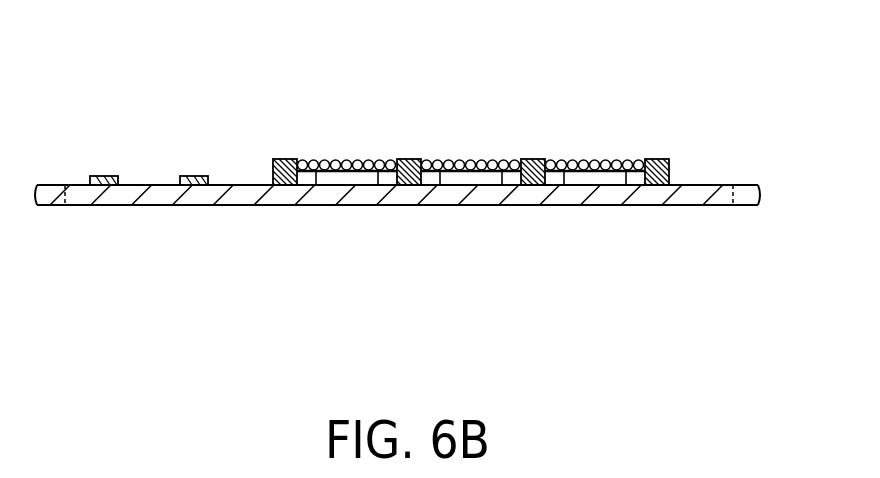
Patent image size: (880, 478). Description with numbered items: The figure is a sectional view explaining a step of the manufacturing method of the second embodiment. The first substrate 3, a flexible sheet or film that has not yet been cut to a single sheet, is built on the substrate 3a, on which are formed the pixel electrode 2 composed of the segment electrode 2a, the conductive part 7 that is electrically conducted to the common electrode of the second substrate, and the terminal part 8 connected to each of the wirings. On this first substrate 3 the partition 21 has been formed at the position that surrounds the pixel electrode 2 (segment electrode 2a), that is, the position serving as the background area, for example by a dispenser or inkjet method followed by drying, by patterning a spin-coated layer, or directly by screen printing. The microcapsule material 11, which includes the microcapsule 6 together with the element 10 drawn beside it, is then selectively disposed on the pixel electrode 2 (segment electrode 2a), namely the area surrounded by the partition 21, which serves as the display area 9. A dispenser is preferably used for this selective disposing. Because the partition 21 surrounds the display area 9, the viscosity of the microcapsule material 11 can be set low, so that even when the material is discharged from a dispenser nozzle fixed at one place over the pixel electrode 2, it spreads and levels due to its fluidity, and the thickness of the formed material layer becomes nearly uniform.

The pixel electrode 2 is at (471, 166).
The segment electrode 2a is at (650, 273).
The first substrate 3 is at (233, 206).
The substrate 3a is at (148, 206).
The microcapsule 6 is at (451, 159).
The conductive part 7 is at (194, 175).
The terminal part 8 is at (104, 175).
The display area 9 is at (473, 191).
The conductive particles 10 is at (507, 159).
The microcapsule material 11 is at (471, 114).
The partition 21 is at (291, 158).